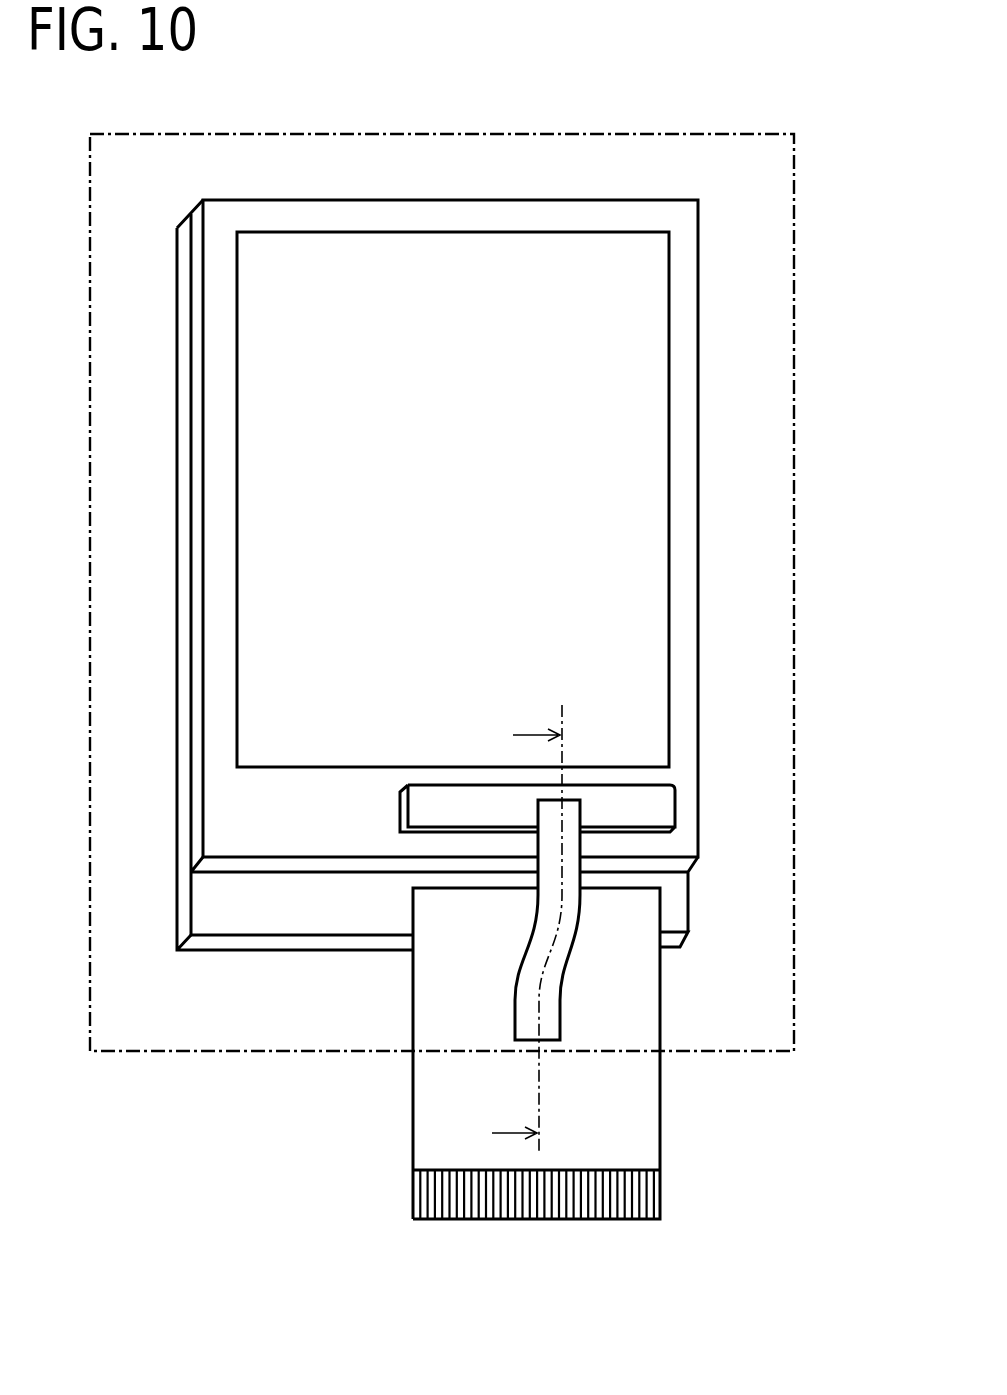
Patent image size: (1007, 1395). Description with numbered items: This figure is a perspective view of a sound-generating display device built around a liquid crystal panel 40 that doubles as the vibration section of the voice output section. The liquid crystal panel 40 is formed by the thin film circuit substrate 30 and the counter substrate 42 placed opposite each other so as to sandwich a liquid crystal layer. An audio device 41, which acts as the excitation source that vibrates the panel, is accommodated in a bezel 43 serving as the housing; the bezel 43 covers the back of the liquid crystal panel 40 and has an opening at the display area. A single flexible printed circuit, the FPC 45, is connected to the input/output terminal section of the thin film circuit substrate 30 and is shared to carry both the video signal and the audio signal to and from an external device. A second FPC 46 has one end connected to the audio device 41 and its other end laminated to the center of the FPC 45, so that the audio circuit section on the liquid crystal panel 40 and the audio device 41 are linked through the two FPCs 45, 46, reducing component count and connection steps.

The thin film circuit substrate 30 is at (184, 313).
The liquid crystal panel 40 is at (699, 321).
The audio device 41 is at (660, 803).
The counter substrate 42 is at (192, 386).
The bezel 43 is at (795, 183).
The flexible printed circuit (FPC) 45 is at (643, 1117).
The FPC 46 is at (545, 1013).